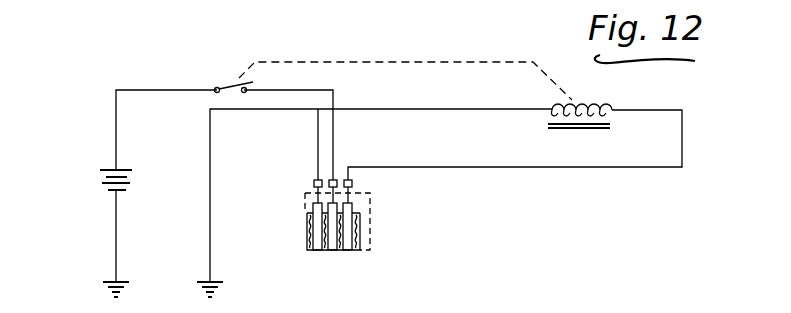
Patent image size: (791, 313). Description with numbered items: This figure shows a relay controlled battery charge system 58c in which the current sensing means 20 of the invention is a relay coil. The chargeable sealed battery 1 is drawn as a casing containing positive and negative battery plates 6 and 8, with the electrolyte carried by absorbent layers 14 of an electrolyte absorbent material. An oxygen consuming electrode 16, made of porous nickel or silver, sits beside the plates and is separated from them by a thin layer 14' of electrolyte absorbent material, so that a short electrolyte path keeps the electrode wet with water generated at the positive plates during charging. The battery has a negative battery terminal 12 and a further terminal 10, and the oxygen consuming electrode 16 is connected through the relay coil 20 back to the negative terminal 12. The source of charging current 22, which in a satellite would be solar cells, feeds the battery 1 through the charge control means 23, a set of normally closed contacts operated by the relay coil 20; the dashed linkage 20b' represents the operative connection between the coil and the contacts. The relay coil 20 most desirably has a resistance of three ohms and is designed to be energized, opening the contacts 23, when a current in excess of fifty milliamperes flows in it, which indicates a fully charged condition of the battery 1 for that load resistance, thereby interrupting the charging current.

The control circuit 58c is at (185, 20).
The source of charging current 22 is at (107, 163).
The charge control means 23 is at (218, 87).
The mechanical linkage 20b' is at (405, 54).
The current sensing means 20 is at (571, 130).
The negative battery terminal 12 is at (315, 178).
The terminal 10 is at (337, 174).
The negative battery plate 8 is at (318, 239).
The positive battery plate 6 is at (332, 253).
The oxygen consuming electrode 16 is at (356, 230).
The absorbent layer 14 is at (290, 230).
The thin layer of electrolyte absorbent material 14' is at (381, 219).
The chargeable sealed battery 1 is at (322, 257).